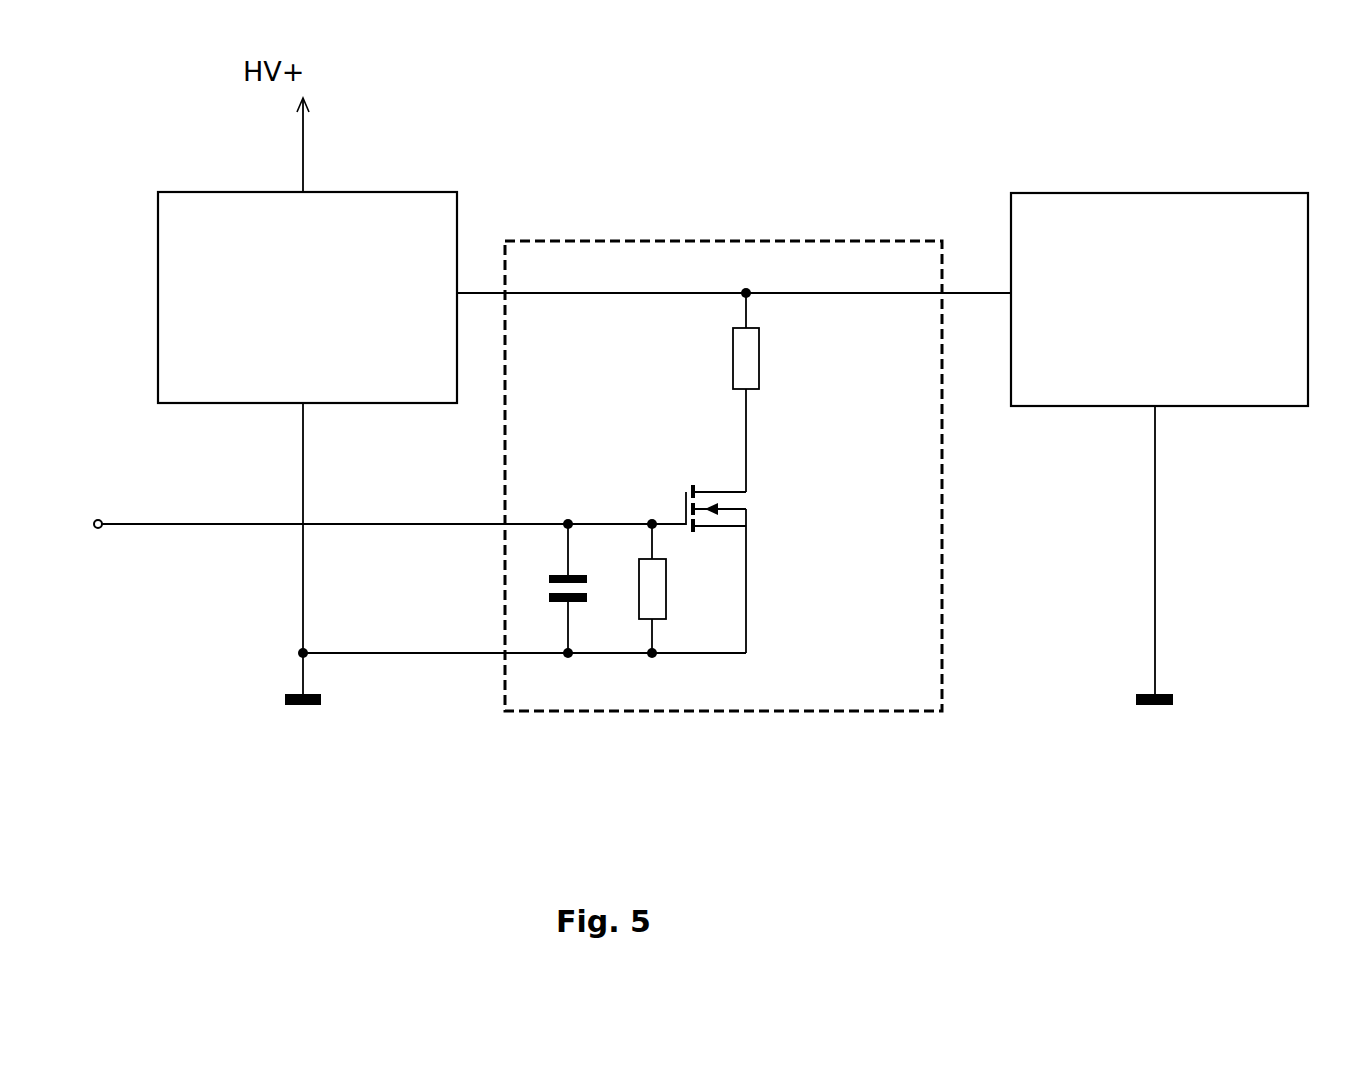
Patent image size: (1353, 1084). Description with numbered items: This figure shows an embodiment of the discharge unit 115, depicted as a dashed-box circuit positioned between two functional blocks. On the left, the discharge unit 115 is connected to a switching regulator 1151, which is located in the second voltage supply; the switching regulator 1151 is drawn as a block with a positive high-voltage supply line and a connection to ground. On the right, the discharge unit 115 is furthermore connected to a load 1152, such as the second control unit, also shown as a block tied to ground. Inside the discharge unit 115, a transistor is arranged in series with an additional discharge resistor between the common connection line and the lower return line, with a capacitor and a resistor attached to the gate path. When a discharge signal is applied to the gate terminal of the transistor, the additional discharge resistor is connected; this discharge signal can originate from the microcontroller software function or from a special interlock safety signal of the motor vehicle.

The switching regulator 1151 is at (197, 191).
The load 1152 is at (1180, 192).
The discharge unit 115 is at (817, 240).